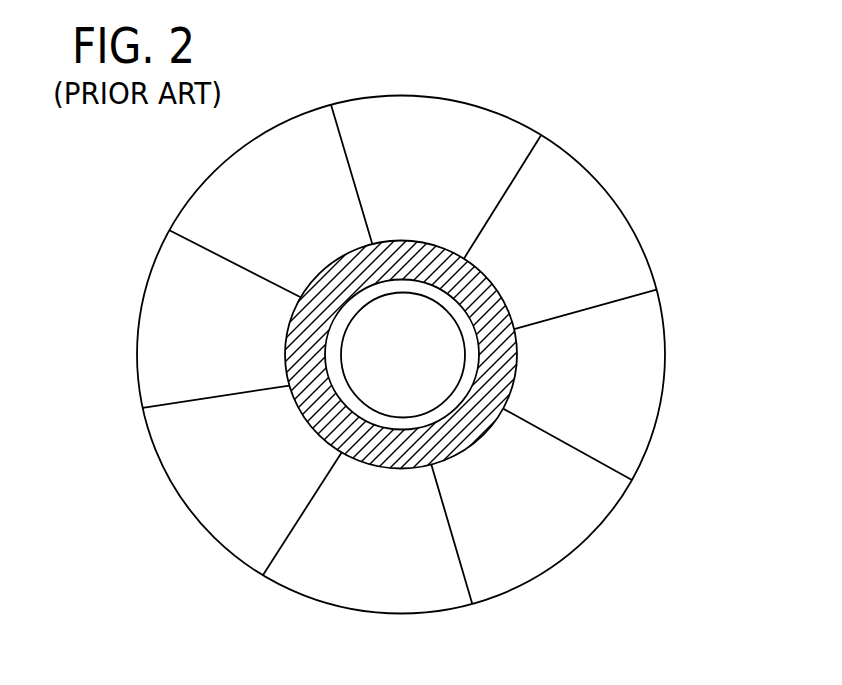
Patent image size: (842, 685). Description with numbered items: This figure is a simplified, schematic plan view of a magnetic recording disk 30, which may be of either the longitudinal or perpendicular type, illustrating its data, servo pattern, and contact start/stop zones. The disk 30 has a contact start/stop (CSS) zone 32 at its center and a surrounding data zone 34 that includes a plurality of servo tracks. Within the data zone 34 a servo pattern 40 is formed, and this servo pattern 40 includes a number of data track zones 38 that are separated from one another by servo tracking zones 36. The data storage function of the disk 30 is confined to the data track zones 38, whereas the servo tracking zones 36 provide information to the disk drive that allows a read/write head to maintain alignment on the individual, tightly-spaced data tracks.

The magnetic recording disk 30 is at (404, 340).
The contact start/stop (CSS) zone 32 is at (525, 375).
The data zone 34 is at (545, 495).
The servo tracking zones 36 is at (350, 180).
The data track zones 38 is at (317, 153).
The servo pattern 40 is at (228, 339).